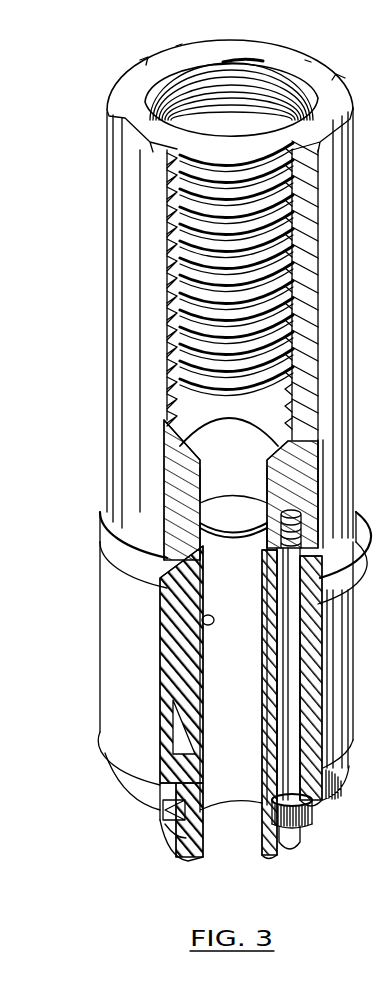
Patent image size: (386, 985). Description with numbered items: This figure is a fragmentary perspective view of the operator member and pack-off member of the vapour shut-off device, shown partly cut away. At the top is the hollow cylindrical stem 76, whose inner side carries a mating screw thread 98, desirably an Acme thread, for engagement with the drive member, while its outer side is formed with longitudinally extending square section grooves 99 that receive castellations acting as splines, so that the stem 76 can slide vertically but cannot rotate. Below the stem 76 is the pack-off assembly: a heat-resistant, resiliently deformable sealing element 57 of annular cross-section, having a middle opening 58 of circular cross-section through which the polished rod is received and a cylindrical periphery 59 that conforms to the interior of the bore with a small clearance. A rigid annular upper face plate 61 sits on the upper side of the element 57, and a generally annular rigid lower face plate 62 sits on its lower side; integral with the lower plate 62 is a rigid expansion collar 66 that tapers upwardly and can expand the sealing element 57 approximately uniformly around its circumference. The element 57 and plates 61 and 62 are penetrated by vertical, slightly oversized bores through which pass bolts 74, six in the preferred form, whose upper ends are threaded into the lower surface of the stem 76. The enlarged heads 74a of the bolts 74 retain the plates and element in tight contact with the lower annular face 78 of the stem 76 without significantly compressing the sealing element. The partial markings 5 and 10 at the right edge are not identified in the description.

The longitudinally extending square section grooves 99 is at (162, 57).
The mating screw thread 98 is at (265, 94).
The hollow cylindrical stem 76 is at (308, 423).
The bolts 74 is at (293, 523).
The enlarged heads 74a is at (306, 818).
The lower annular face 78 is at (203, 548).
The annular upper face plate 61 is at (116, 552).
The cylindrical periphery 59 is at (107, 603).
The middle opening 58 is at (205, 622).
The sealing element 57 is at (172, 666).
The expansion collar 66 is at (160, 720).
The lower face plate 62 is at (140, 794).
The partial numeral 5 is at (381, 542).
The partial numeral 10 is at (379, 568).